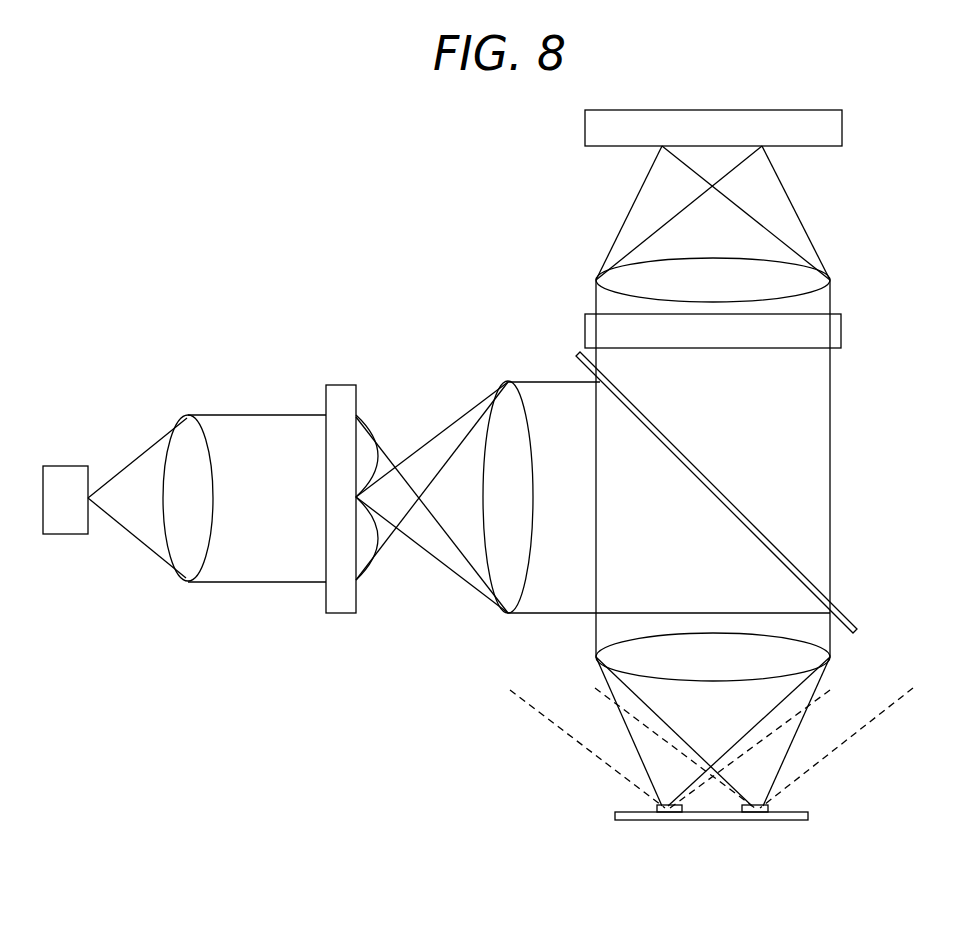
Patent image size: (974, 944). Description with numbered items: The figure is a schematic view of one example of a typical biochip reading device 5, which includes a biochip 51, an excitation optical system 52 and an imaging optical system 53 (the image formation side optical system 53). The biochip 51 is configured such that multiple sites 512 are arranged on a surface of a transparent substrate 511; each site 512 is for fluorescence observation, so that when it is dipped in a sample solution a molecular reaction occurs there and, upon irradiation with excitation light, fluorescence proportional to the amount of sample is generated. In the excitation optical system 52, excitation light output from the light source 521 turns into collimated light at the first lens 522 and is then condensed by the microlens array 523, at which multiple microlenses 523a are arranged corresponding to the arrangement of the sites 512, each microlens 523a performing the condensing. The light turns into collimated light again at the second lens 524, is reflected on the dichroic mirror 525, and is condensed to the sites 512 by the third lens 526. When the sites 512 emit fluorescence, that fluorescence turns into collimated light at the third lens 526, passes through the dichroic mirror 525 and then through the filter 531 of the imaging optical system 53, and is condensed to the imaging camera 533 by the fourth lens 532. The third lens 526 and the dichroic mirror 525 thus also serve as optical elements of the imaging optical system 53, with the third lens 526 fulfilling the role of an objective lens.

The biochip reading device 5 is at (436, 161).
The biochip 51 is at (820, 818).
The transparent substrate 511 is at (712, 822).
The sites 512 is at (650, 806).
The excitation optical system 52 is at (352, 360).
The light source 521 is at (66, 465).
The first lens 522 is at (183, 582).
The microlens array 523 is at (342, 614).
The microlenses 523a is at (377, 413).
The second lens 524 is at (507, 380).
The dichroic mirror 525 is at (795, 562).
The third lens 526 is at (812, 641).
The imaging optical system 53 is at (893, 392).
The filter 531 is at (842, 328).
The fourth lens 532 is at (767, 258).
The imaging camera 533 is at (842, 125).